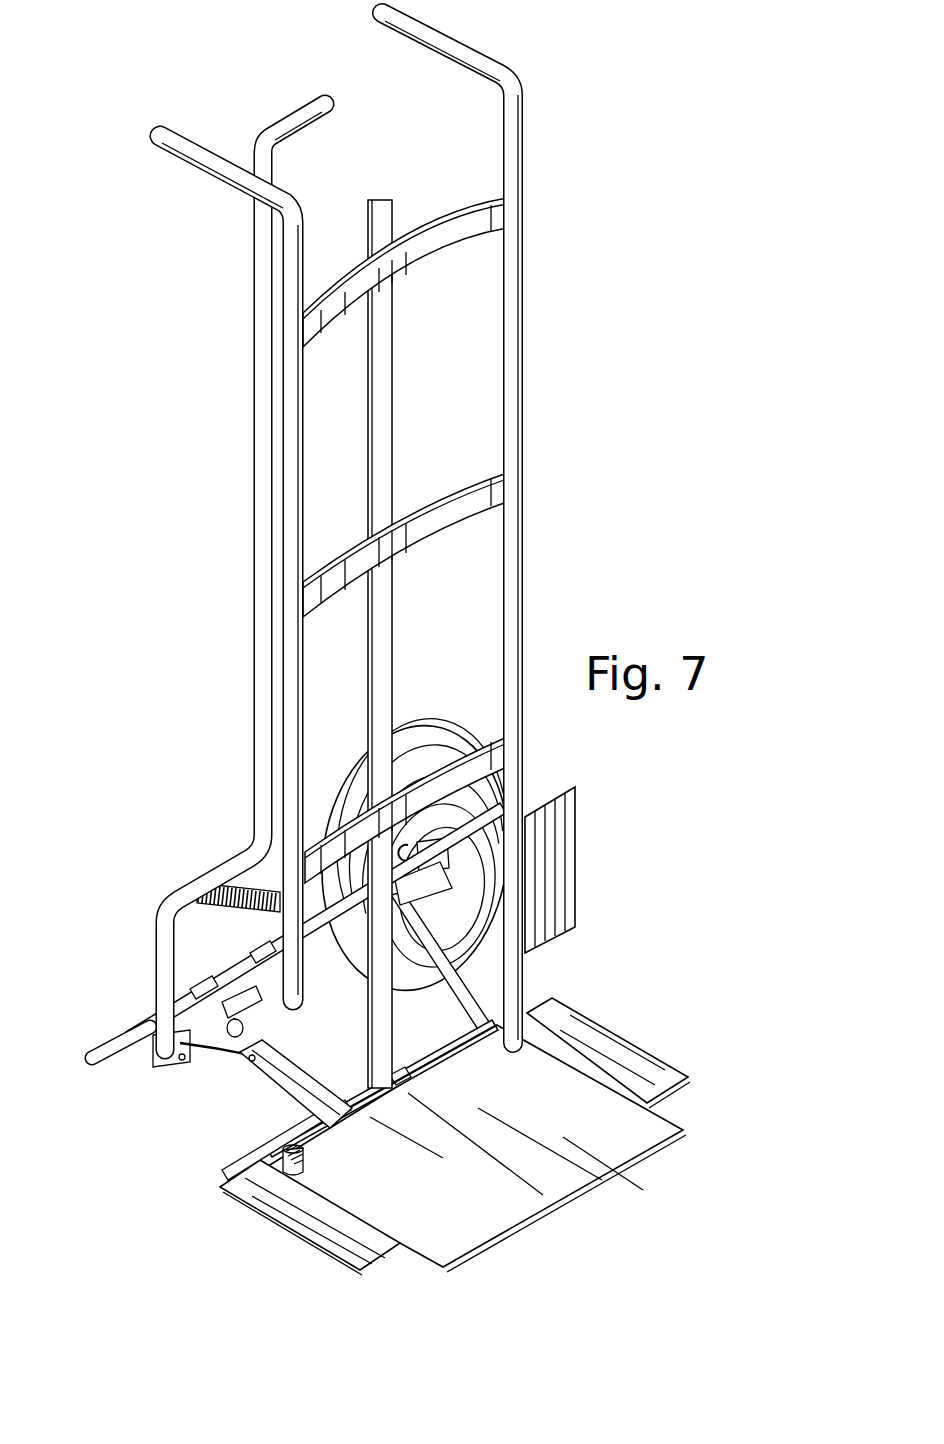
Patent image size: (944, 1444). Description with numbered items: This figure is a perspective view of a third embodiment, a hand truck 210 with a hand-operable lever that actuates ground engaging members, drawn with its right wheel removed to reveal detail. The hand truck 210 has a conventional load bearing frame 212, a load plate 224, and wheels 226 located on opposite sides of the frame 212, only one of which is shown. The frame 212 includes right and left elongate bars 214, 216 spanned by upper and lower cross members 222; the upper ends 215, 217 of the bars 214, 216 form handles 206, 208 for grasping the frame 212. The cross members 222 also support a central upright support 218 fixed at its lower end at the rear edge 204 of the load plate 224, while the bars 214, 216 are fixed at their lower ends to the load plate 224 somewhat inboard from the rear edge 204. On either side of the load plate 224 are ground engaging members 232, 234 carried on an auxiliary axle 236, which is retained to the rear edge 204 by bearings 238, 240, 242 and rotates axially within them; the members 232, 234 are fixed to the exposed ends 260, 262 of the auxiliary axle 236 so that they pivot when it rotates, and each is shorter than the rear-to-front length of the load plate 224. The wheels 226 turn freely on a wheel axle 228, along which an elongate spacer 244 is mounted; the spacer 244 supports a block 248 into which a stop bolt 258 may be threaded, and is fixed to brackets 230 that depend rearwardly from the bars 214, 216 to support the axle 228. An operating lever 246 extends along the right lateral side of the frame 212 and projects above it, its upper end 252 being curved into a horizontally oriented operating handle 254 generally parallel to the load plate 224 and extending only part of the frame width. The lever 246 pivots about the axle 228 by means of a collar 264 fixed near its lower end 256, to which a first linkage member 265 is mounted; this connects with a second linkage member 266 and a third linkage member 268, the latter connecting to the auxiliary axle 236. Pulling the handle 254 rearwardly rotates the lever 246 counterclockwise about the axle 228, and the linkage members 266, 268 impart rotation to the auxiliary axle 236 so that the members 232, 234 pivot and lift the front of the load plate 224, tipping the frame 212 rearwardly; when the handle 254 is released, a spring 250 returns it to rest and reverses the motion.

The rear edge 204 is at (398, 1070).
The handle 206 is at (182, 568).
The handle 208 is at (508, 521).
The hand truck 210 is at (180, 398).
The load bearing frame 212 is at (545, 280).
The elongate bar 214 is at (290, 527).
The upper end 215 is at (205, 182).
The elongate bar 216 is at (525, 547).
The upper end 217 is at (500, 60).
The central upright support 218 is at (390, 417).
The cross members 222 is at (423, 254).
The load plate 224 is at (489, 1148).
The wheels 226 is at (410, 745).
The wheel axle 228 is at (95, 1055).
The brackets 230 is at (455, 1005).
The ground engaging member 232 is at (288, 1216).
The ground engaging member 234 is at (597, 1042).
The auxiliary axle 236 is at (408, 1085).
The bearing 238 is at (310, 1150).
The bearing 240 is at (387, 1105).
The bearing 242 is at (480, 1037).
The elongate spacer 244 is at (265, 962).
The operating lever 246 is at (258, 642).
The block 248 is at (262, 1000).
The spring 250 is at (250, 890).
The upper end 252 is at (266, 541).
The operating handle 254 is at (325, 128).
The lower end 256 is at (146, 1062).
The stop bolt 258 is at (235, 1043).
The exposed end 260 is at (237, 1158).
The exposed end 262 is at (537, 998).
The collar 264 is at (205, 1000).
The first linkage member 265 is at (145, 1072).
The second linkage member 266 is at (214, 1060).
The third linkage member 268 is at (273, 1097).